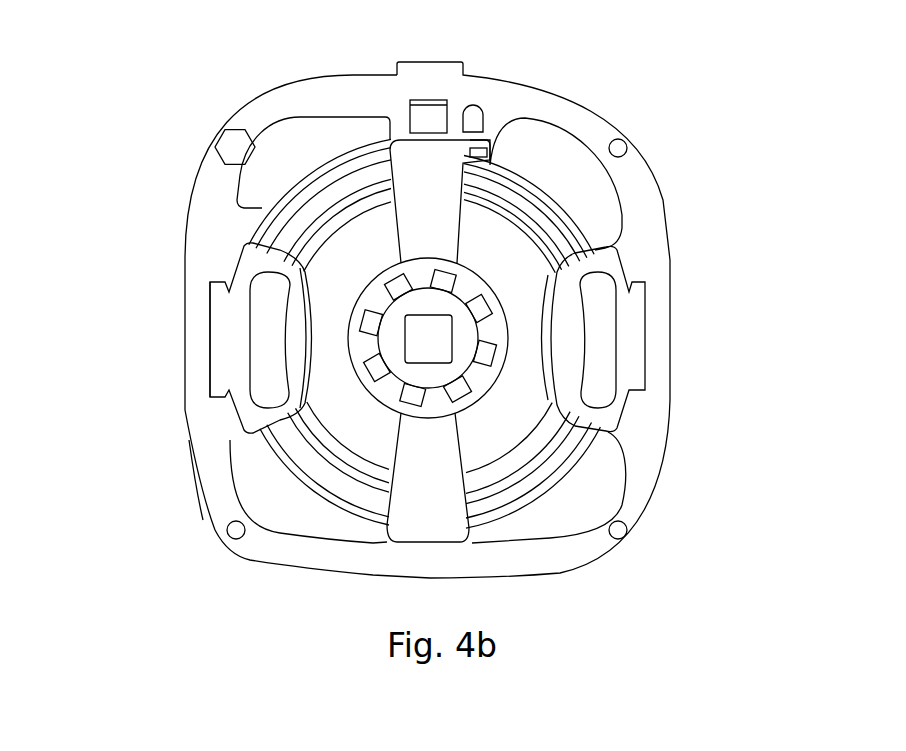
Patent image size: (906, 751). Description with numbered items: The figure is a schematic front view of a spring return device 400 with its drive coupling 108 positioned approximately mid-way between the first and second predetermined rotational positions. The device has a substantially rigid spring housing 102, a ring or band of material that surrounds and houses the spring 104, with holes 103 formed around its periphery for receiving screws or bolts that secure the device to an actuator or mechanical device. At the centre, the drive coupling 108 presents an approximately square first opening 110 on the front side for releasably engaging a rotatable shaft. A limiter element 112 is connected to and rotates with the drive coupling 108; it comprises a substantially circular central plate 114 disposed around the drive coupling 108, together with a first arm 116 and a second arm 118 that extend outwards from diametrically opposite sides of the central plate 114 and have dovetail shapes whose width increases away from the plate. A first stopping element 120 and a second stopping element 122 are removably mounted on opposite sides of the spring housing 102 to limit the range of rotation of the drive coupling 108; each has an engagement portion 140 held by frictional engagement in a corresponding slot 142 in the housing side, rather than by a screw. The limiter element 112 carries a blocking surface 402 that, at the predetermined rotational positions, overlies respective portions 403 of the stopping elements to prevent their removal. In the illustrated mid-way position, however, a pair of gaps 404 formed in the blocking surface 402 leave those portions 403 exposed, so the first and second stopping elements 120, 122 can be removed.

The spring return device 400 is at (152, 128).
The spring housing 102 is at (200, 503).
The holes 103 is at (621, 141).
The spring 104 is at (305, 168).
The drive coupling 108 is at (467, 287).
The first opening 110 is at (427, 327).
The limiter element 112 is at (345, 450).
The central plate 114 is at (507, 432).
The first arm 116 is at (432, 157).
The second arm 118 is at (422, 510).
The first stopping element 120 is at (610, 260).
The second stopping element 122 is at (247, 413).
The engagement portion 140 is at (215, 360).
The slot 142 is at (212, 303).
The blocking surface 402 is at (513, 240).
The portions 403 is at (557, 343).
The gaps 404 is at (543, 363).